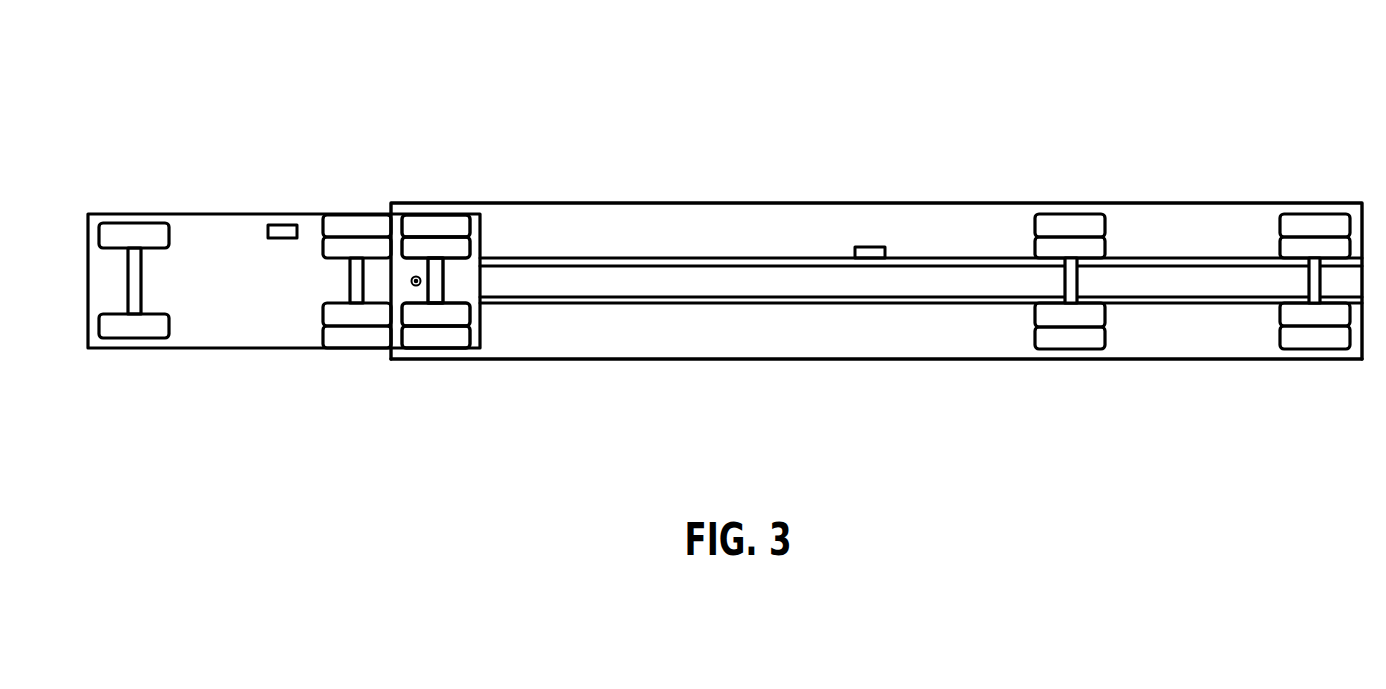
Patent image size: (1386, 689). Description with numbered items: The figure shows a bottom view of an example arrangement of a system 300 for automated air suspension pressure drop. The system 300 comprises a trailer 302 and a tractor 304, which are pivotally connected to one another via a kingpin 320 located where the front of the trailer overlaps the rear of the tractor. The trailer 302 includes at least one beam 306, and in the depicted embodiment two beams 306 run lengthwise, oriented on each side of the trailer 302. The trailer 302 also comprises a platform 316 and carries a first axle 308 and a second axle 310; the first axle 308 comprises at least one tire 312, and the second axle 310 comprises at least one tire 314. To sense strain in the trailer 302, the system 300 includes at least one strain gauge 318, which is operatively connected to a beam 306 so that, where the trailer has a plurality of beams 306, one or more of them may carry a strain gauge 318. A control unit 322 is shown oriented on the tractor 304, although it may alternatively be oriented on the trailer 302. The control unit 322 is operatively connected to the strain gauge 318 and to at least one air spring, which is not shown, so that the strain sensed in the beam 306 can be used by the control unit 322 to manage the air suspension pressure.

The system 300 is at (517, 118).
The trailer 302 is at (1141, 163).
The tractor 304 is at (193, 182).
The beam 306 is at (823, 258).
The first axle 308 is at (1317, 277).
The second axle 310 is at (1062, 277).
The tire 312 is at (1325, 337).
The tire 314 is at (1053, 333).
The platform 316 is at (588, 343).
The strain gauge 318 is at (877, 248).
The kingpin 320 is at (416, 286).
The control unit 322 is at (285, 227).